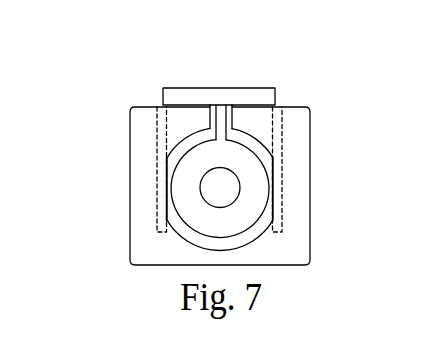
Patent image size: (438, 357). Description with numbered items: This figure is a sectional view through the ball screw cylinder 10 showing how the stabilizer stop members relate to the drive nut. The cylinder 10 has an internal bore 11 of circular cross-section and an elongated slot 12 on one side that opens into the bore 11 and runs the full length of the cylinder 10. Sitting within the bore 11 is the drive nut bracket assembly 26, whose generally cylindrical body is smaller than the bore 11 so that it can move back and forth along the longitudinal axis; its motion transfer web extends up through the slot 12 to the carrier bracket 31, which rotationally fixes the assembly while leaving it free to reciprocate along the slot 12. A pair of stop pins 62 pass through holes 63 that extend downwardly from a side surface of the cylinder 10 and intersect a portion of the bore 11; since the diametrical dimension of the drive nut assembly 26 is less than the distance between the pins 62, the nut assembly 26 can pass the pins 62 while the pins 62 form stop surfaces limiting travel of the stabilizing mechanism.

The cylinder 10 is at (302, 135).
The internal bore 11 is at (245, 241).
The elongated slot 12 is at (224, 113).
The drive nut bracket assembly 26 is at (255, 185).
The carrier bracket 31 is at (205, 88).
The stop pin 62 is at (160, 193).
The hole 63 is at (158, 122).